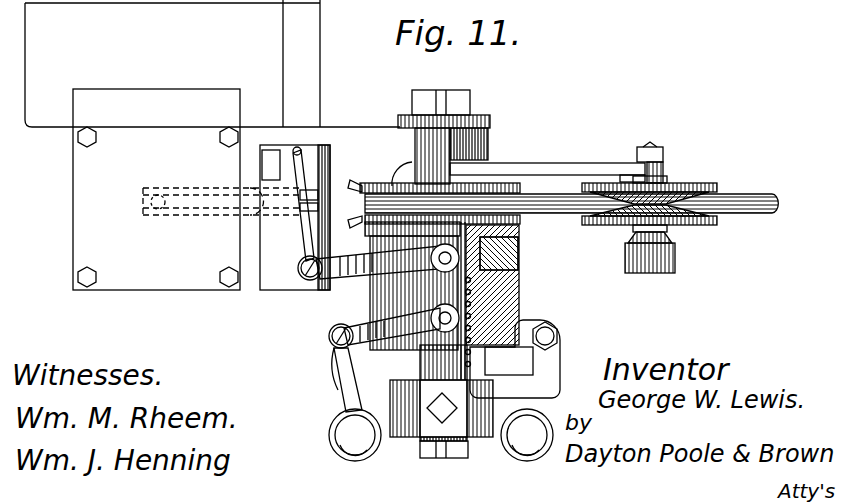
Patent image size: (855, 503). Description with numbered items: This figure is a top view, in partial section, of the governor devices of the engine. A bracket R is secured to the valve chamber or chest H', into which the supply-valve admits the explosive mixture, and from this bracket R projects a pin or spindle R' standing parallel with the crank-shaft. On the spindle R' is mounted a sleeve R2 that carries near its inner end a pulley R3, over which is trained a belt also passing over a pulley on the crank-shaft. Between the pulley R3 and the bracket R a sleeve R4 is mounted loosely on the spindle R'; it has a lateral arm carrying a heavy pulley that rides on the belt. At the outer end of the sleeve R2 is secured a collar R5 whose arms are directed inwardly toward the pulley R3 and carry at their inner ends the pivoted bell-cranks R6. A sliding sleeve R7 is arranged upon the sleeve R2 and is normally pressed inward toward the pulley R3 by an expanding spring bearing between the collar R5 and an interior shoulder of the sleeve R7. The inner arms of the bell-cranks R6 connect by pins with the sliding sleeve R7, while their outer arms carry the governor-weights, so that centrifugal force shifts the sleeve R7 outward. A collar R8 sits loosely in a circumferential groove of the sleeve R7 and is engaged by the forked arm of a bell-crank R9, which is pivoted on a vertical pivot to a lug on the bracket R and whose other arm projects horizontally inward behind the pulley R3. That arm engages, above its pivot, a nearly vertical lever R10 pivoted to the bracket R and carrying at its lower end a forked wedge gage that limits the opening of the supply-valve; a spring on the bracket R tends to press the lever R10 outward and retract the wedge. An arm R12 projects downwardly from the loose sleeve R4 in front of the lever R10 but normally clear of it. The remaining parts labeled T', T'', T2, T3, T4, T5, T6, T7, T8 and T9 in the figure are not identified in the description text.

The bracket R is at (212, 63).
The valve chamber or chest H' is at (156, 189).
The guide rod T'' is at (221, 210).
The nearly-vertical lever R10 is at (300, 160).
The connecting link T9 is at (306, 241).
The pivot pin T8 is at (292, 270).
The lever arm T7 is at (378, 265).
The arm R12 is at (402, 178).
The sleeve R4 is at (478, 157).
The pulley R3 is at (515, 185).
The shaft T' is at (571, 200).
The grooved pulley T2 is at (693, 184).
The sliding sleeve R7 is at (518, 286).
The collar R8 is at (518, 249).
The rack T4 is at (468, 370).
The lower lever arm T5 is at (442, 315).
The bell-crank R9 is at (316, 298).
The bell-cranks R6 is at (343, 363).
The connecting link T3 is at (345, 386).
The roller wheel T6 is at (441, 435).
The collar R5 is at (441, 408).
The sleeve R2 is at (420, 445).
The pin or spindle R' is at (444, 468).